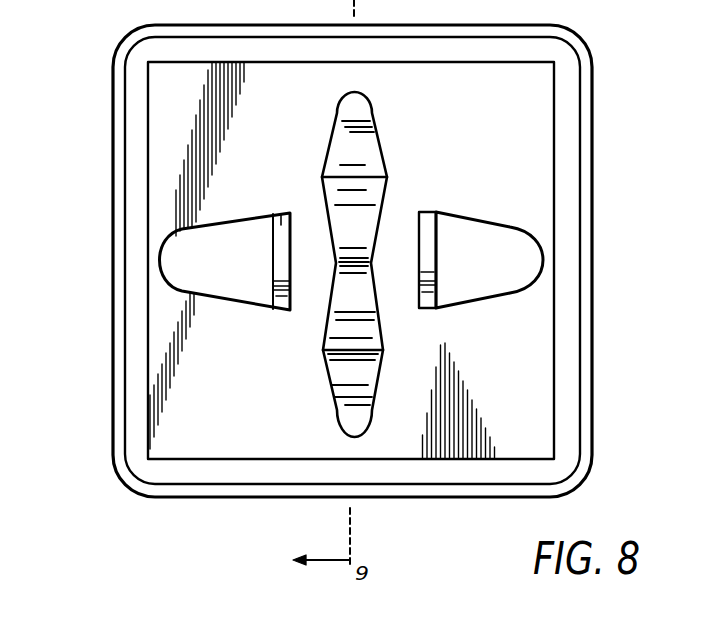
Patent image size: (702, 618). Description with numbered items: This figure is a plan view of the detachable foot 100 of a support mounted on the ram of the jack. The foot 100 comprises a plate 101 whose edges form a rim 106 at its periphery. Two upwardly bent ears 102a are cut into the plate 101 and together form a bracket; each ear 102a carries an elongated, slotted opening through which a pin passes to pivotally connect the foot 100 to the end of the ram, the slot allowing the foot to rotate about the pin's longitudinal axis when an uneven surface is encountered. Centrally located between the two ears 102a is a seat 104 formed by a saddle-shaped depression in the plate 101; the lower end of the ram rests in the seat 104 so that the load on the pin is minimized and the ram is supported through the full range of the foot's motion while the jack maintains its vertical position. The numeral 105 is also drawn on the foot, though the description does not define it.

The foot 100 is at (110, 328).
The plate 101 is at (170, 87).
The ears 102a is at (288, 212).
The seat 104 is at (343, 320).
The blade intermediate section 105 is at (348, 171).
The rim 106 is at (347, 120).